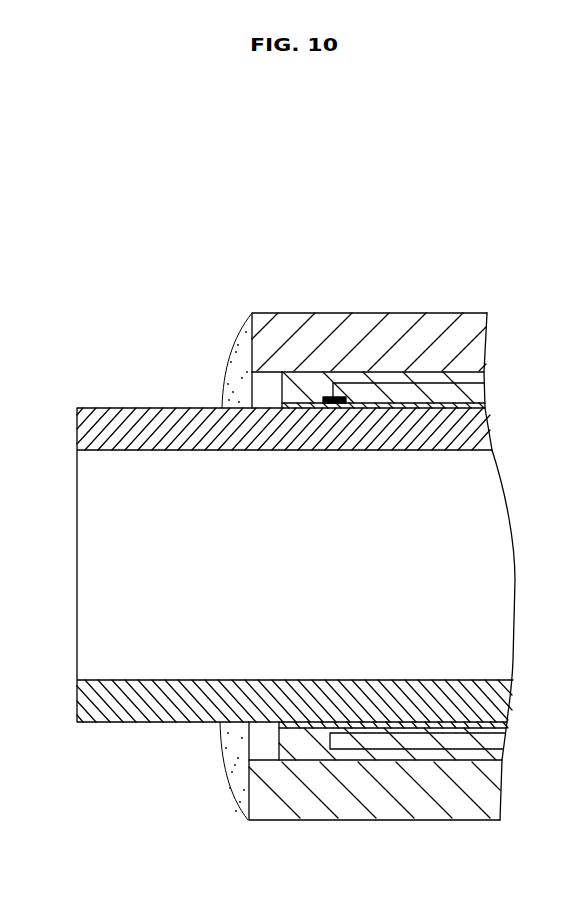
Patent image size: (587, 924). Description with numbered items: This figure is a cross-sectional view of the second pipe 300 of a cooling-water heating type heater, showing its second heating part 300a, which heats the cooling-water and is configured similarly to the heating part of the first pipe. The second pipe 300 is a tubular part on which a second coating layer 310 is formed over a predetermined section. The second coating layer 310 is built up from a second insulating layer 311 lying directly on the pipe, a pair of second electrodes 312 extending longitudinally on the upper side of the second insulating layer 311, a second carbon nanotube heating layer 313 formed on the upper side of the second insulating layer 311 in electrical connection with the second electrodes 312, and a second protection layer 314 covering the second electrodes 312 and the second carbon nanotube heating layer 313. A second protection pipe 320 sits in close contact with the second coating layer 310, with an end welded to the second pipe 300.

The second pipe 300 is at (86, 302).
The second heating part 300a is at (455, 171).
The second coating layer 310 is at (380, 221).
The second insulating layer 311 is at (382, 372).
The second electrodes 312 is at (325, 397).
The second carbon nanotube heating layer 313 is at (342, 397).
The second protection layer 314 is at (357, 378).
The second protection pipe 320 is at (432, 330).